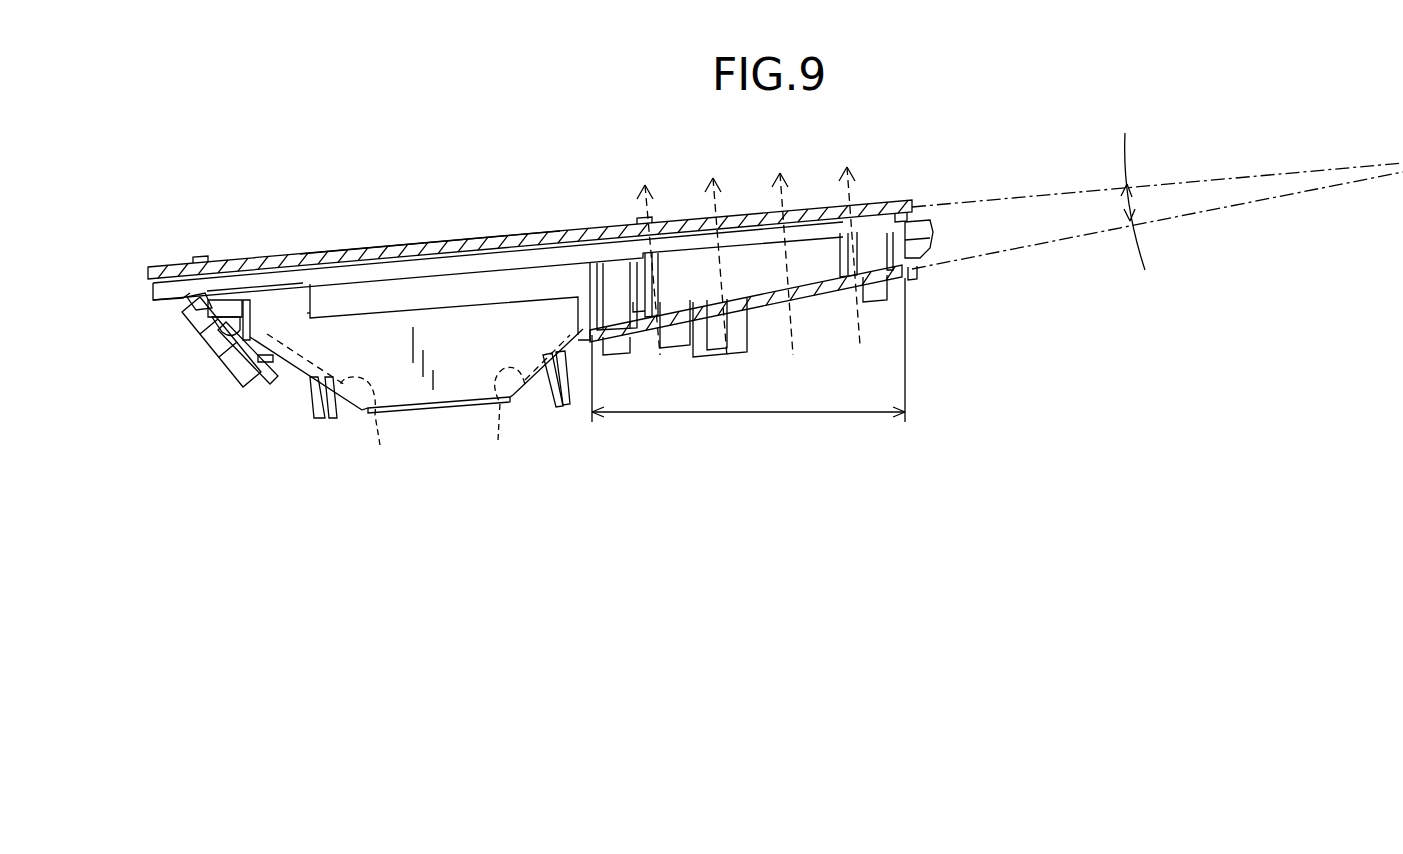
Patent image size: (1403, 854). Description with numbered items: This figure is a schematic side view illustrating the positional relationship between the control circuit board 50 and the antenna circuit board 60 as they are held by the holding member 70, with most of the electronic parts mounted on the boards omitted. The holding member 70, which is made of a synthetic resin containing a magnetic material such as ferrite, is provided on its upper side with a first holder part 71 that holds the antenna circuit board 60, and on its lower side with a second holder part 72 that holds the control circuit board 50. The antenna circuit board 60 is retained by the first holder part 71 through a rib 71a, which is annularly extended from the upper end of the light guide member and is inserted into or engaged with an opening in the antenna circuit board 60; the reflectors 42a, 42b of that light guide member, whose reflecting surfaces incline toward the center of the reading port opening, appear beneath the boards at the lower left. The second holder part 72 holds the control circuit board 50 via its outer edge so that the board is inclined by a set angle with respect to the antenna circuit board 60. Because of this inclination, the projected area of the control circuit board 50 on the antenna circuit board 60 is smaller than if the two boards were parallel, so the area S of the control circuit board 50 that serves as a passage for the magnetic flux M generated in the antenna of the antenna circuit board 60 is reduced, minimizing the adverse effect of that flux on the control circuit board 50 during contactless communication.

The first holder part 71 is at (884, 179).
The rib 71a is at (430, 236).
The antenna circuit board 60 is at (673, 221).
The magnetic flux arrows M is at (778, 197).
The control circuit board 50 is at (830, 293).
The second holder part 72 is at (917, 304).
The magnetic flux passage area S is at (748, 350).
The holding member 70 is at (528, 380).
The reflector 42b is at (296, 401).
The reflector 42a is at (491, 435).